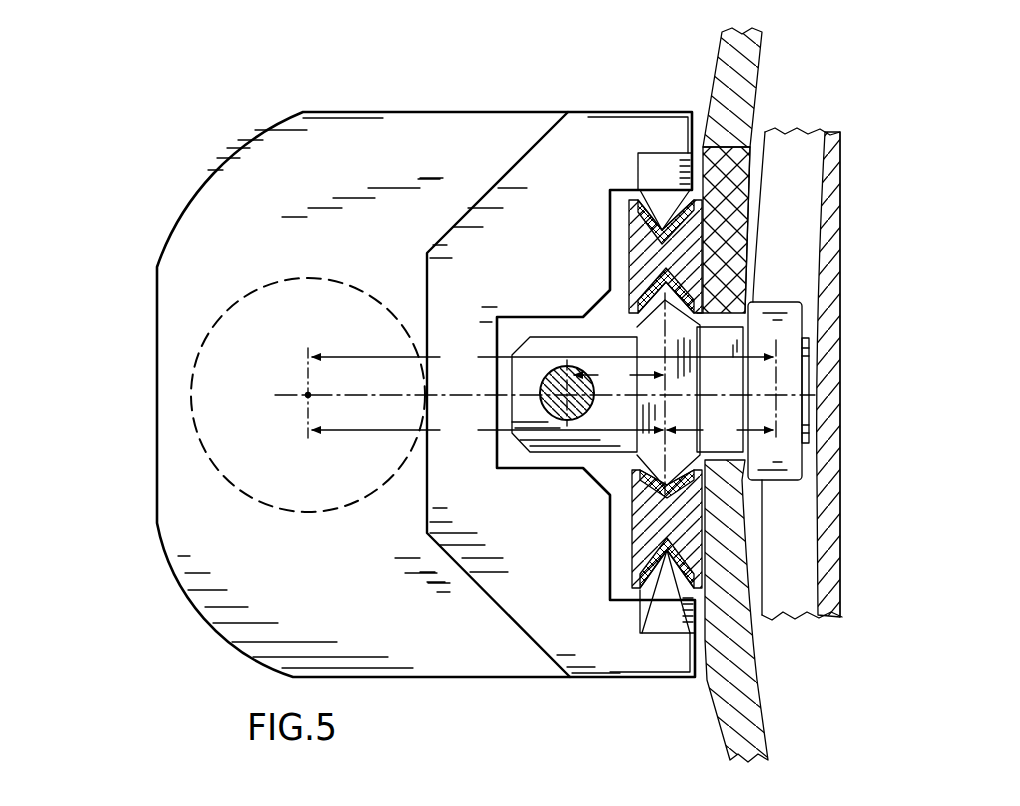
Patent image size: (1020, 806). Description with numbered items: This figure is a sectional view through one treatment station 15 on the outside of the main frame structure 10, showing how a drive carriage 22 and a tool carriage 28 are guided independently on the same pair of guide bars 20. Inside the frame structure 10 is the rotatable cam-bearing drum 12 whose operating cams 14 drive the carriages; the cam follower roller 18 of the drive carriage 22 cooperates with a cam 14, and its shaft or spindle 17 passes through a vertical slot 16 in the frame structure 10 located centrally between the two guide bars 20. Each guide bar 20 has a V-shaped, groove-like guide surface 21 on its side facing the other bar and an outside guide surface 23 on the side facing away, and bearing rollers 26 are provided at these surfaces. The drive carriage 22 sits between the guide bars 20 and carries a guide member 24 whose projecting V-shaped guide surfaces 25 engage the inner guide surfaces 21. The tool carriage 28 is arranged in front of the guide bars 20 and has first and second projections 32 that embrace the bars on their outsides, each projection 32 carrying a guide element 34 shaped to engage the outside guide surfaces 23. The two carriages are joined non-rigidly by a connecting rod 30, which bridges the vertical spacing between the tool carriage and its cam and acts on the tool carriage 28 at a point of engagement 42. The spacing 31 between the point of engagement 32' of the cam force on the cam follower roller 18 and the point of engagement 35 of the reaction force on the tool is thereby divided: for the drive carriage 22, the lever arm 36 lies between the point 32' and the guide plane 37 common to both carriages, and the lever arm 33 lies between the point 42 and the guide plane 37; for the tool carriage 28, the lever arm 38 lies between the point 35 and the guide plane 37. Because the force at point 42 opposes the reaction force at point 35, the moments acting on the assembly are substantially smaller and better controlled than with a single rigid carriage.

The main frame structure 10 is at (746, 62).
The cam-bearing drum 12 is at (827, 513).
The operating cams 14 is at (804, 145).
The treatment station 15 is at (623, 88).
The slot 16 is at (743, 275).
The shaft or spindle 17 is at (755, 440).
The cam follower roller 18 is at (790, 458).
The guide bar 20 is at (641, 250).
The guide surfaces 21 is at (735, 235).
The drive carriage 22 is at (522, 445).
The outside guide surfaces 23 is at (665, 218).
The guide member 24 is at (588, 313).
The guide surfaces 25 is at (743, 252).
The bearing rollers 26 is at (640, 592).
The tool carriage 28 is at (584, 112).
The connecting rod 30 is at (543, 377).
The spacing 31 is at (542, 356).
The projections 32 is at (639, 402).
The point of engagement 32' is at (824, 382).
The lever arm 33 is at (618, 374).
The guide element 34 is at (652, 168).
The point of engagement 35 is at (305, 392).
The lever arm 36 is at (720, 431).
The guide plane 37 is at (608, 281).
The lever arm 38 is at (487, 429).
The point of engagement 42 is at (566, 432).